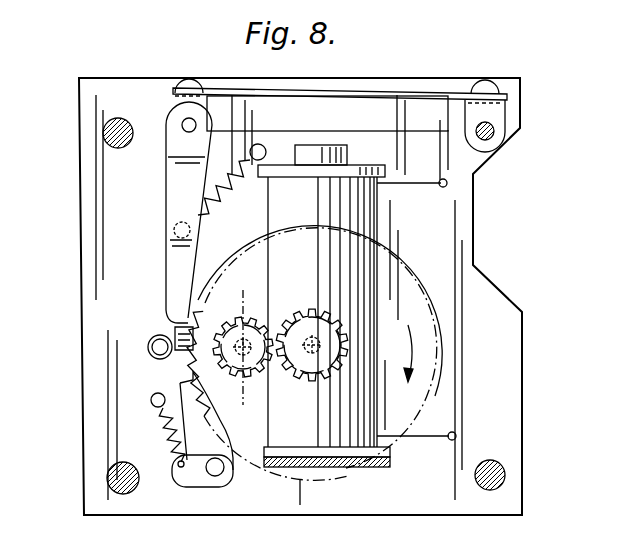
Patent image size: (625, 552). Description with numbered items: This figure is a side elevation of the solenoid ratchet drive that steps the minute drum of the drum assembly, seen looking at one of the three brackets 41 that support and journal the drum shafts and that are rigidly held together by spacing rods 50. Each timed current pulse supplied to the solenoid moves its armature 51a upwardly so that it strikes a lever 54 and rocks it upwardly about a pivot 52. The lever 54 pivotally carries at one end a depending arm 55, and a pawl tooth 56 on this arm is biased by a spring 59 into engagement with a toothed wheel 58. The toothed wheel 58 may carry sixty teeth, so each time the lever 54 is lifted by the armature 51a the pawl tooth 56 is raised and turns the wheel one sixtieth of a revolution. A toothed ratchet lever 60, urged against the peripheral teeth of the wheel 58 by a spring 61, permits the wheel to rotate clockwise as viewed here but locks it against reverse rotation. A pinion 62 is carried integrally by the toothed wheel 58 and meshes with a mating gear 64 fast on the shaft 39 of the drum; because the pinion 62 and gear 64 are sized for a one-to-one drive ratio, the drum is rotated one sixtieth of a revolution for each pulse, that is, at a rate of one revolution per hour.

The bracket 41 is at (98, 460).
The lever 54 is at (340, 90).
The spacing rod 50 is at (124, 146).
The pivot 52 is at (490, 137).
The depending arm 55 is at (176, 205).
The spring 59 is at (222, 203).
The armature 51a is at (350, 157).
The shaft 39 is at (243, 310).
The mating gear 64 is at (243, 372).
The pinion 62 is at (317, 387).
The toothed wheel 58 is at (172, 330).
The pawl tooth 56 is at (178, 360).
The toothed ratchet lever 60 is at (176, 389).
The spring 61 is at (166, 440).